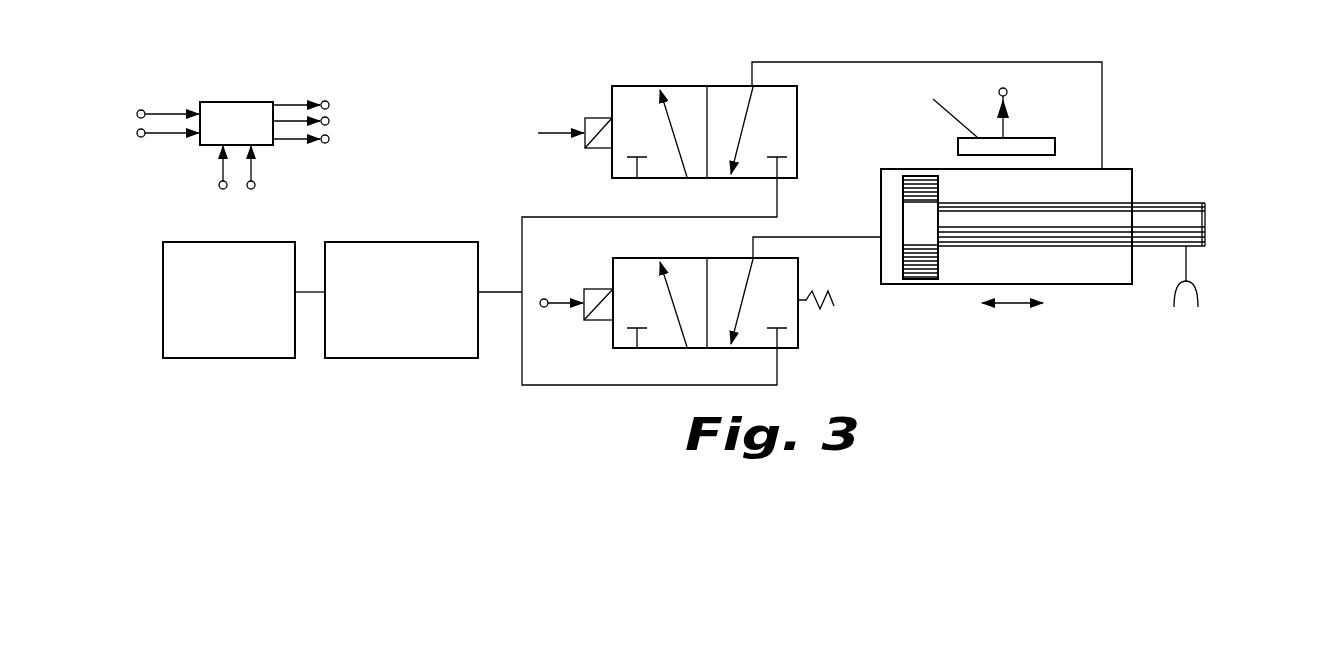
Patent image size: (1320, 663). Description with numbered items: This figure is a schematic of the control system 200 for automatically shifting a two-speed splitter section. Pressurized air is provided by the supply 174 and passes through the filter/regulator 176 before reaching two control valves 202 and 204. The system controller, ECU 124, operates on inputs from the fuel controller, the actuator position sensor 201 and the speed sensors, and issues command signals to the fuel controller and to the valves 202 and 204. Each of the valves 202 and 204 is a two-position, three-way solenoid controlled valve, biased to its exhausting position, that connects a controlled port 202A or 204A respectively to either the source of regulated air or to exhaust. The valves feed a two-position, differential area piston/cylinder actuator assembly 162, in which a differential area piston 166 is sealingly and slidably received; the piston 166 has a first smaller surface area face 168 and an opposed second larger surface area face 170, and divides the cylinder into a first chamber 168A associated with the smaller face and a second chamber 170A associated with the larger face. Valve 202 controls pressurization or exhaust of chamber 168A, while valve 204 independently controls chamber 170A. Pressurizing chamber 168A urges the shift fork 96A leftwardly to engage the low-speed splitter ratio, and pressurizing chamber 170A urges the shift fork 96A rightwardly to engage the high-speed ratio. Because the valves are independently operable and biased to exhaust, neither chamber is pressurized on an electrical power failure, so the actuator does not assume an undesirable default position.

The ECU 124 is at (235, 127).
The supply 174 is at (262, 239).
The filter/regulator 176 is at (400, 239).
The control system 200 is at (906, 56).
The actuator position sensor 201 is at (1028, 137).
The control valve 202 is at (608, 101).
The controlled port 202A is at (753, 86).
The control valve 204 is at (637, 249).
The controlled port 204A is at (753, 257).
The differential area piston/cylinder actuator assembly 162 is at (1138, 148).
The differential area piston 166 is at (913, 213).
The first smaller surface area face 168 is at (939, 190).
The first chamber 168A is at (1046, 265).
The second larger surface area face 170 is at (902, 193).
The second chamber 170A is at (895, 260).
The shift fork 96A is at (1188, 262).